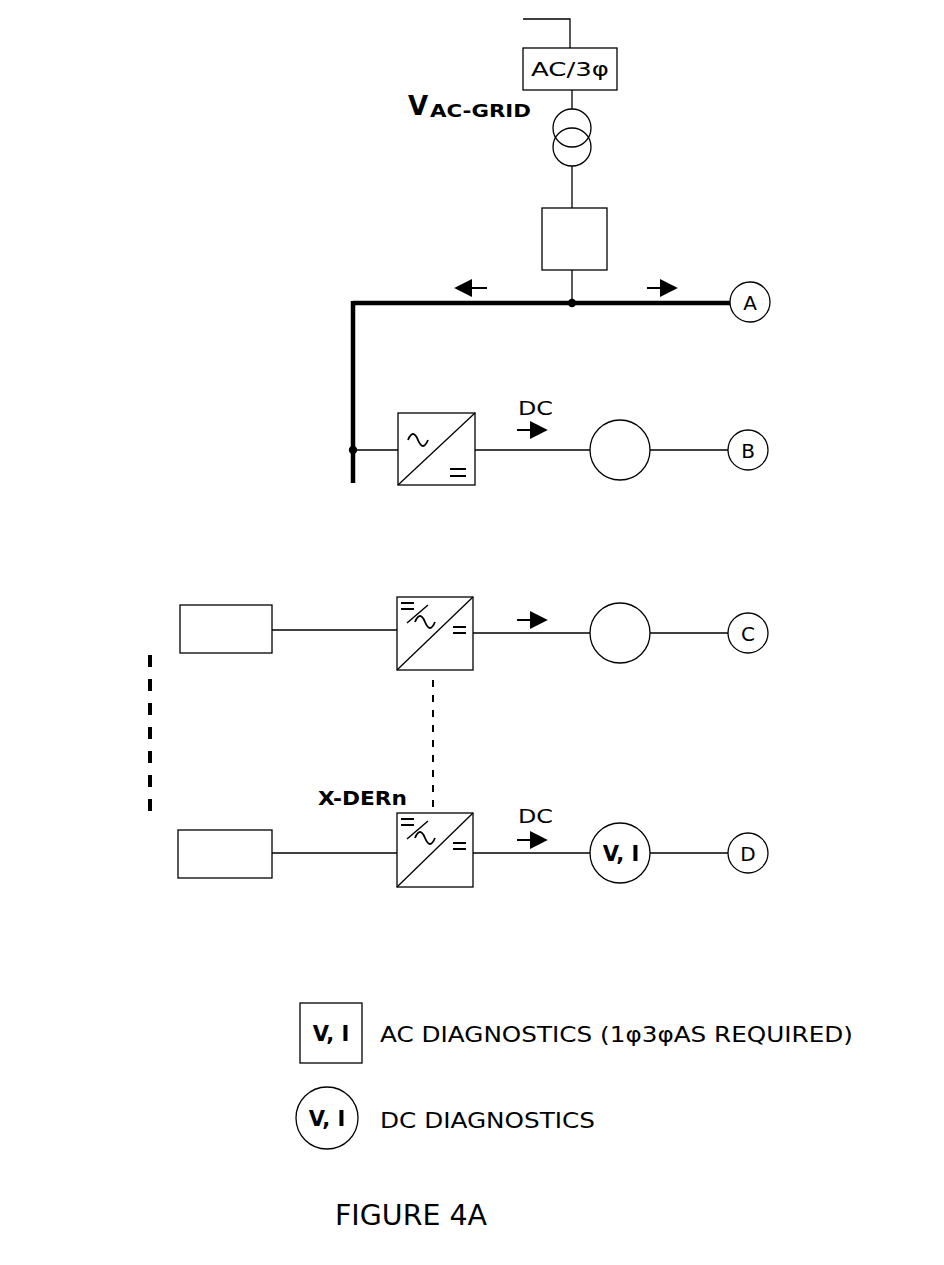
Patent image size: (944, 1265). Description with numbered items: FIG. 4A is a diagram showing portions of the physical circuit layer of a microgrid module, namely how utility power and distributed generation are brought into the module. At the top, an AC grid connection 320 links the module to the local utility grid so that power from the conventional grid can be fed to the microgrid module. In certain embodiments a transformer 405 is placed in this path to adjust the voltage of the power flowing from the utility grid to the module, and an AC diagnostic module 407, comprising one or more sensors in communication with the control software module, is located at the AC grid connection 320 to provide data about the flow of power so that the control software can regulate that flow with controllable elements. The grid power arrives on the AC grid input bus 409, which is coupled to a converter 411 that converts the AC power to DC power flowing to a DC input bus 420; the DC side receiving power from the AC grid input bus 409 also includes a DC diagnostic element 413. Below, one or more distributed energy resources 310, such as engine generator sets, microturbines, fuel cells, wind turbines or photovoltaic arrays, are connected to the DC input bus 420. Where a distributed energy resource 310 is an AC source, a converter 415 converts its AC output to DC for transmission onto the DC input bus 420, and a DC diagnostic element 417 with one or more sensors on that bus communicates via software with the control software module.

The AC grid connection 320 is at (403, 38).
The transformer 405 is at (673, 147).
The AC diagnostic module 407 is at (538, 235).
The AC grid input bus 409 is at (500, 370).
The converter 411 is at (425, 455).
The DC diagnostic element 413 is at (634, 476).
The converter 415 is at (458, 637).
The DC diagnostic element 417 is at (637, 656).
The DC input bus 420 is at (531, 597).
The distributed energy resources 310 is at (212, 688).